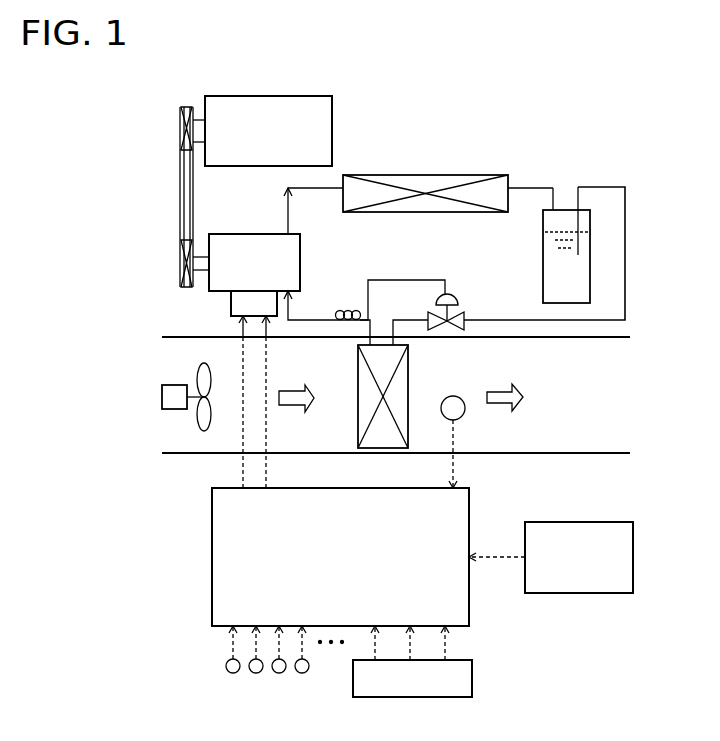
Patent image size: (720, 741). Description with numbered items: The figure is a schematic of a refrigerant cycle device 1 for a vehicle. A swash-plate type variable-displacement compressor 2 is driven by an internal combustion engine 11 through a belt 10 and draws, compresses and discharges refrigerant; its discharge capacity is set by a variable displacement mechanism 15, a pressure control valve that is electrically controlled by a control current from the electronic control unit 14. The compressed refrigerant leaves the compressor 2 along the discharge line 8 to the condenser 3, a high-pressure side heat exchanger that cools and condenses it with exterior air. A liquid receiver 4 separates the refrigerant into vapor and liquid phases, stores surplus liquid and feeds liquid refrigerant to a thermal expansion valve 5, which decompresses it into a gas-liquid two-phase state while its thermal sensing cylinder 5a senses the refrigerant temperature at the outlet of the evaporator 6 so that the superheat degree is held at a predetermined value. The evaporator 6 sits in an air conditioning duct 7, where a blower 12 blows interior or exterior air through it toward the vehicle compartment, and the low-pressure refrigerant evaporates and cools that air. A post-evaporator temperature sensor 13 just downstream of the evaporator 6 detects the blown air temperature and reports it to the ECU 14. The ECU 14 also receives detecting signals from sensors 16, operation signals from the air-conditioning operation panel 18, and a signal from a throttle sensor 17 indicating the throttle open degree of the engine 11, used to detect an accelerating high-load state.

The refrigerant cycle device 1 is at (590, 173).
The compressor 2 is at (301, 249).
The condenser 3 is at (434, 174).
The liquid receiver 4 is at (542, 271).
The expansion valve 5 is at (462, 308).
The thermal sensing cylinder 5a is at (350, 309).
The evaporator 6 is at (356, 369).
The air conditioning duct 7 is at (545, 453).
The refrigerant pipe 8 is at (287, 186).
The belt 10 is at (182, 186).
The internal combustion engine 11 is at (226, 97).
The blower 12 is at (196, 369).
The post-evaporator temperature sensor 13 is at (453, 395).
The electronic control unit 14 is at (212, 529).
The variable displacement mechanism 15 is at (231, 303).
The sensors 16 is at (226, 680).
The throttle sensor 17 is at (633, 535).
The air-conditioning operation panel 18 is at (472, 670).